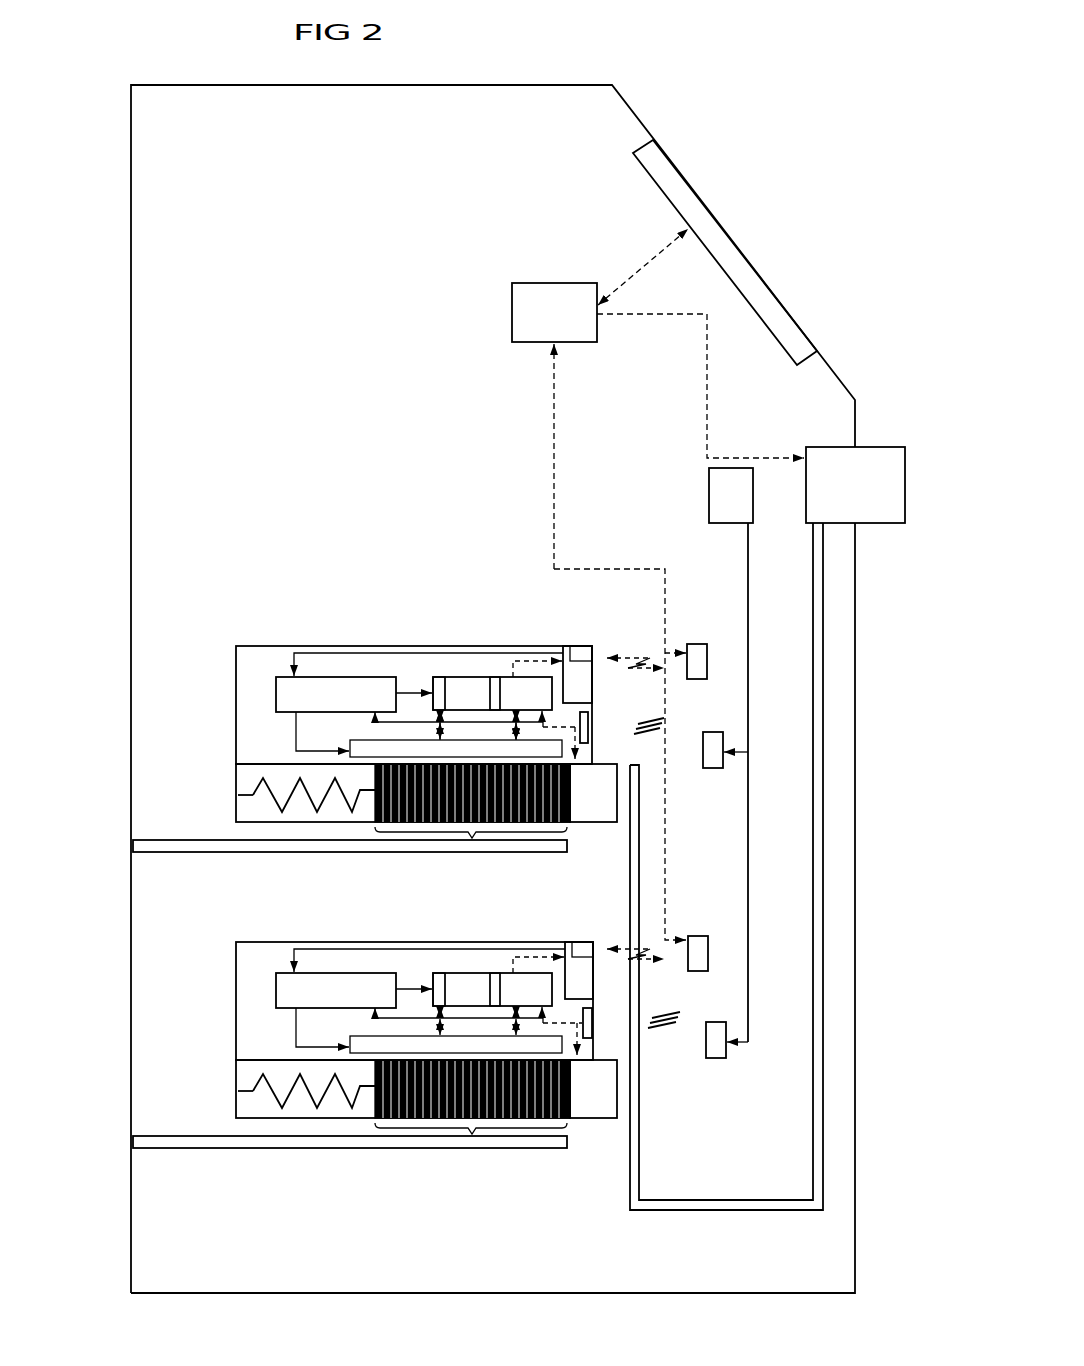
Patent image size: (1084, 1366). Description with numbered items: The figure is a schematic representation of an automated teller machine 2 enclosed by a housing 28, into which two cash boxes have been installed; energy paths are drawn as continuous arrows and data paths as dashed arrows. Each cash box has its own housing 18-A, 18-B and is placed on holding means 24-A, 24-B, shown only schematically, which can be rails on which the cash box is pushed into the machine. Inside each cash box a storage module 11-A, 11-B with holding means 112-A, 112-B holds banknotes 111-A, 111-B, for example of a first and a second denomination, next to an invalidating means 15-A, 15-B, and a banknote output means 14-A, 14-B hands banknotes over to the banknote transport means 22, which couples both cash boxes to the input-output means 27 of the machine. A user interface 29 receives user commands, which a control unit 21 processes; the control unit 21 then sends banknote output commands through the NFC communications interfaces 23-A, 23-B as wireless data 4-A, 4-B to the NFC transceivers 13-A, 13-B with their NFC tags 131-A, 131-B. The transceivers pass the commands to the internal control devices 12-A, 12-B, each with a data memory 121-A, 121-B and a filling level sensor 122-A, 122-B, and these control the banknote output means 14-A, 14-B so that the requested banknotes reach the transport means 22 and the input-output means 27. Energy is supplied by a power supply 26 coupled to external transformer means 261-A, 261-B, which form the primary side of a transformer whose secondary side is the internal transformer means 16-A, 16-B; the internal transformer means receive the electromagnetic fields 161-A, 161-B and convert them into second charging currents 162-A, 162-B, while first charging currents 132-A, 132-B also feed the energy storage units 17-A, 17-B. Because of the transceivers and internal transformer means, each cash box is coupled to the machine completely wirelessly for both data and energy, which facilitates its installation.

The automated teller machine 2 is at (714, 120).
The housing of the automated teller machine 28 is at (165, 84).
The user interface 29 is at (786, 333).
The control unit 21 is at (516, 310).
The input-output means 27 is at (883, 456).
The power supply 26 is at (719, 489).
The banknote transport means 22 is at (740, 1211).
The housing of the cash box 18-A is at (263, 645).
The housing of the cash box 18-B is at (265, 941).
The energy storage unit 17-A is at (276, 693).
The energy storage unit 17-B is at (276, 991).
The first charging current 132-A is at (338, 651).
The first charging current 132-B is at (340, 948).
The second charging current 162-A is at (415, 720).
The second charging current 162-B is at (417, 1017).
The internal control device 12-A is at (467, 682).
The internal control device 12-B is at (468, 979).
The data memory 121-A is at (497, 679).
The data memory 121-B is at (498, 975).
The filling level sensor 122-A is at (440, 679).
The filling level sensor 122-B is at (441, 975).
The NFC transceiver 13-A is at (582, 680).
The NFC transceiver 13-B is at (582, 977).
The NFC tag 131-A is at (581, 651).
The NFC tag 131-B is at (576, 948).
The internal transformer means 16-A is at (589, 726).
The internal transformer means 16-B is at (592, 1022).
The external electromagnetic field 161-A is at (653, 733).
The external electromagnetic field 161-B is at (658, 1029).
The storage module 11-A is at (246, 780).
The storage module 11-B is at (246, 1076).
The invalidating means 15-A is at (360, 752).
The invalidating means 15-B is at (360, 1049).
The holding means 112-A is at (350, 757).
The holding means 112-B is at (310, 1101).
The banknotes 111-A is at (472, 838).
The banknotes 111-B is at (472, 1134).
The banknote output means 14-A is at (607, 797).
The banknote output means 14-B is at (612, 1093).
The holding fixture 24-A is at (196, 854).
The holding fixture 24-B is at (195, 1149).
The data 4-A is at (638, 660).
The data 4-B is at (638, 953).
The NFC communications interface 23-A is at (698, 651).
The NFC communications interface 23-B is at (697, 944).
The external transformer means 261-A is at (713, 741).
The external transformer means 261-B is at (717, 1049).